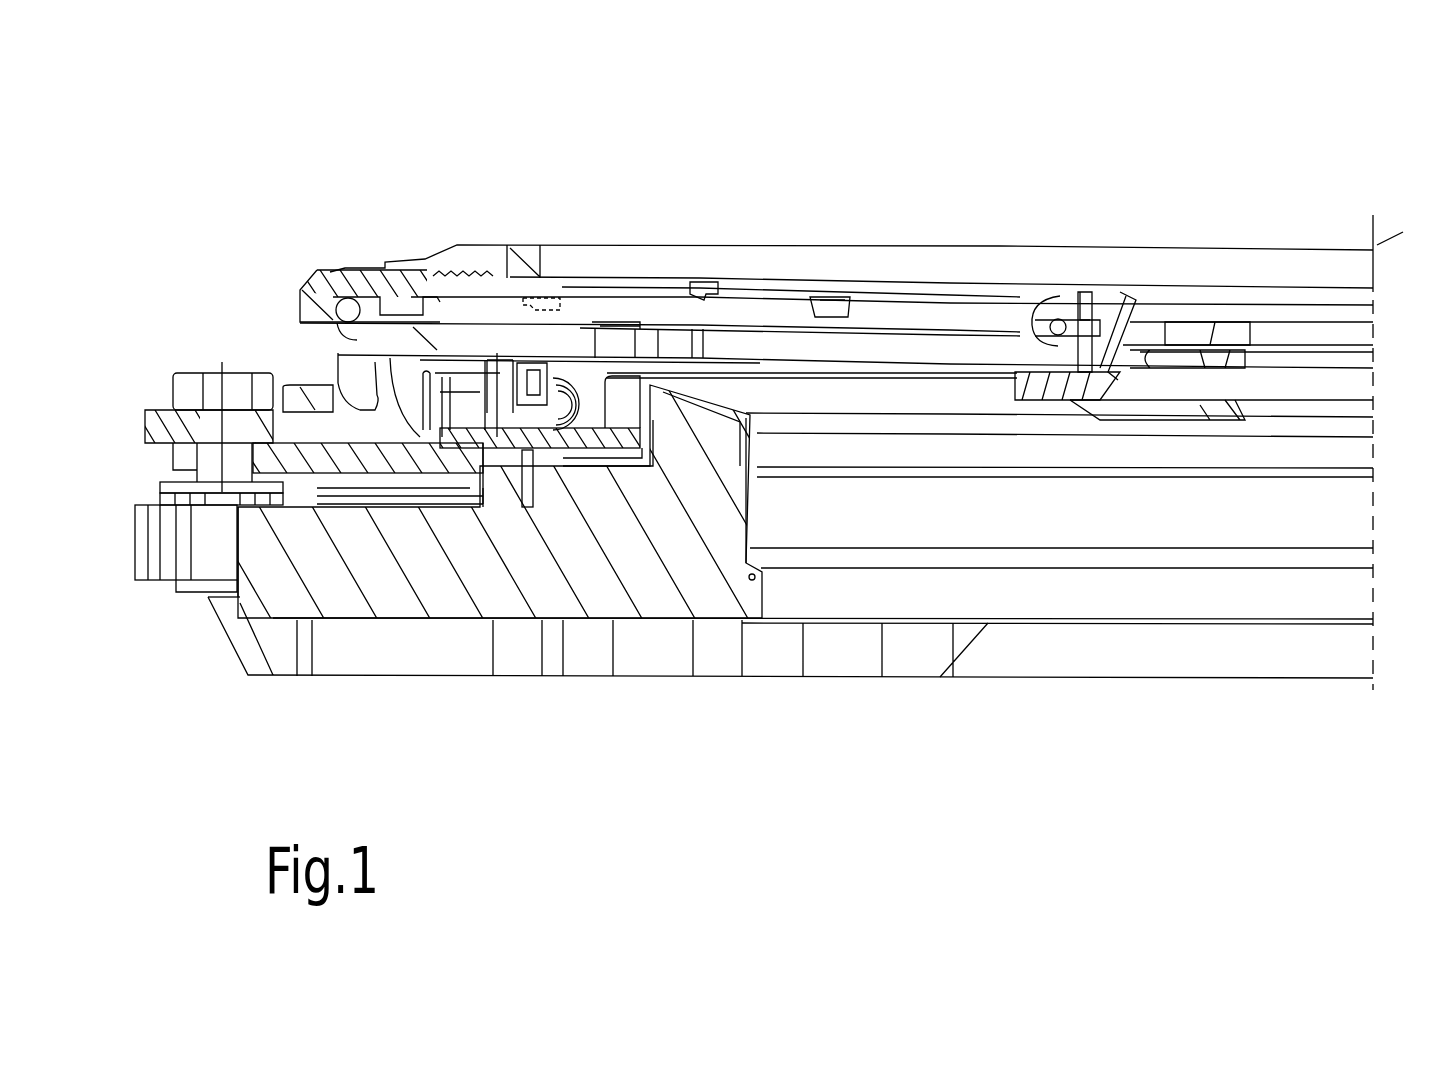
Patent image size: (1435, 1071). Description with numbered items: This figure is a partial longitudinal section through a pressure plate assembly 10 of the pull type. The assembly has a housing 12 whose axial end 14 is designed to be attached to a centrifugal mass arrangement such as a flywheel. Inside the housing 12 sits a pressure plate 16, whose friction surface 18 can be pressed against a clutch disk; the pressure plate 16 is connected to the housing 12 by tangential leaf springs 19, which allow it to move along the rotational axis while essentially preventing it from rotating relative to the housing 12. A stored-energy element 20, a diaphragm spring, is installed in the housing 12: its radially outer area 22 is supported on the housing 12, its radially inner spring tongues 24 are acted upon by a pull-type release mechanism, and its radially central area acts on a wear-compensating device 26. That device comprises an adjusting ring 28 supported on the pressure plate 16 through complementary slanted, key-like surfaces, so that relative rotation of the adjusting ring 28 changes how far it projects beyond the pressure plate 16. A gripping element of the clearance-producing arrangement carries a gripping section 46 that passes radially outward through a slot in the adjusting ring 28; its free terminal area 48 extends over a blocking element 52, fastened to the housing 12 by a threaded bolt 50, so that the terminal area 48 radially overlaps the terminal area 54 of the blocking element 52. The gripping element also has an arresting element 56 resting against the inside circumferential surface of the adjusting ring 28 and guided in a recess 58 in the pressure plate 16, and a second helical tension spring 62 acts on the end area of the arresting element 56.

The pressure plate assembly 10 is at (1136, 175).
The housing 12 is at (1143, 252).
The axial end 14 is at (235, 640).
The pressure plate 16 is at (695, 598).
The friction surface 18 is at (565, 625).
The tangential leaf springs 19 is at (158, 492).
The stored-energy element 20 is at (720, 337).
The radially outer area 22 is at (318, 306).
The spring tongues 24 is at (1045, 348).
The wear-compensating device 26 is at (637, 306).
The adjusting ring 28 is at (497, 417).
The gripping section 46 is at (545, 480).
The free terminal area 48 is at (455, 440).
The threaded bolt 50 is at (205, 385).
The blocking element 52 is at (232, 582).
The terminal area 54 is at (456, 492).
The arresting element 56 is at (750, 575).
The recess 58 is at (537, 466).
The second helical tension spring 62 is at (587, 390).